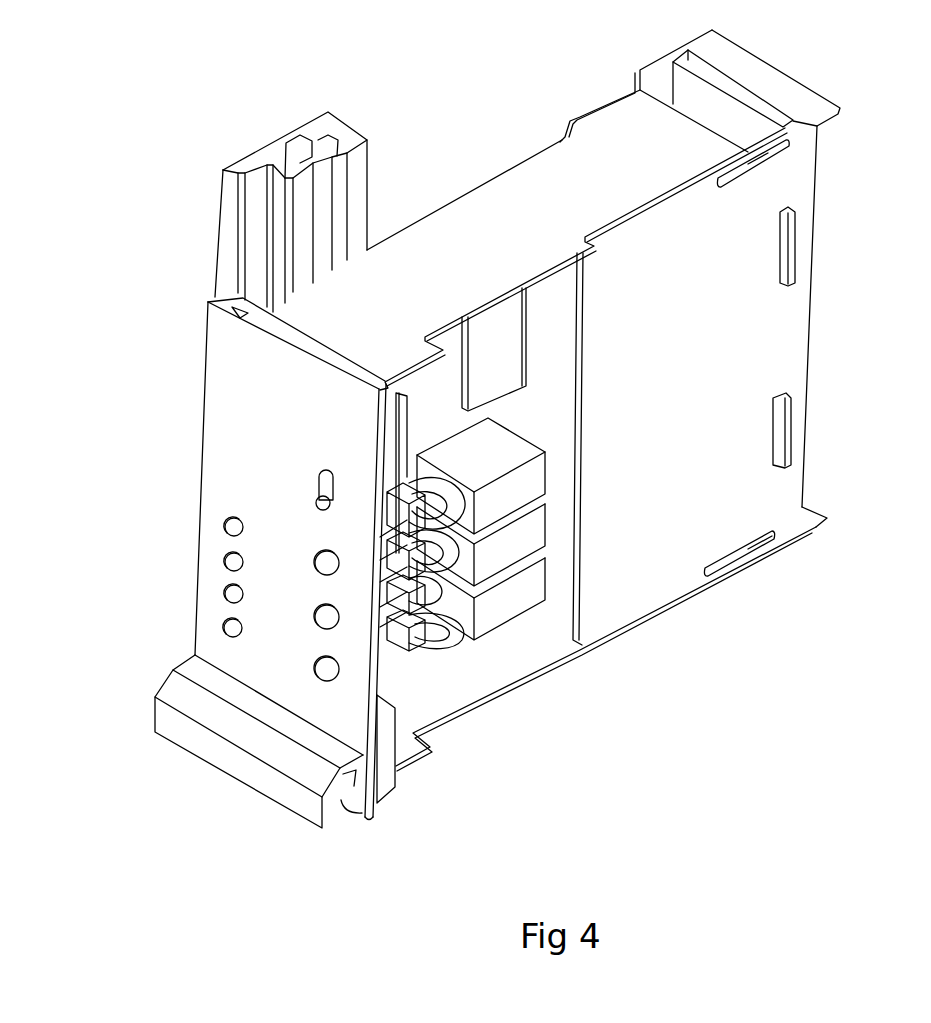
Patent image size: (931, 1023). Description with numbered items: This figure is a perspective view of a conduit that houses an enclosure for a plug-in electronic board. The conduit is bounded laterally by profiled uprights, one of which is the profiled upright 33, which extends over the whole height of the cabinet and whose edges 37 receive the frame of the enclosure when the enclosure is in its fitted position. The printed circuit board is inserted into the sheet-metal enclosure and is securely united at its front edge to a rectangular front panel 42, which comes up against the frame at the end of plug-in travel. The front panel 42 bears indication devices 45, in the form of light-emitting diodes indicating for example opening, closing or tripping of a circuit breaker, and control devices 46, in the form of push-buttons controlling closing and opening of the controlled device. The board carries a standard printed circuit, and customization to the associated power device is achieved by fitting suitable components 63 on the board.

The profiled upright 33 is at (247, 191).
The edge 37 is at (308, 173).
The front panel 42 is at (222, 427).
The indication device 45 is at (226, 627).
The control device 46 is at (318, 674).
The component 63 is at (508, 600).